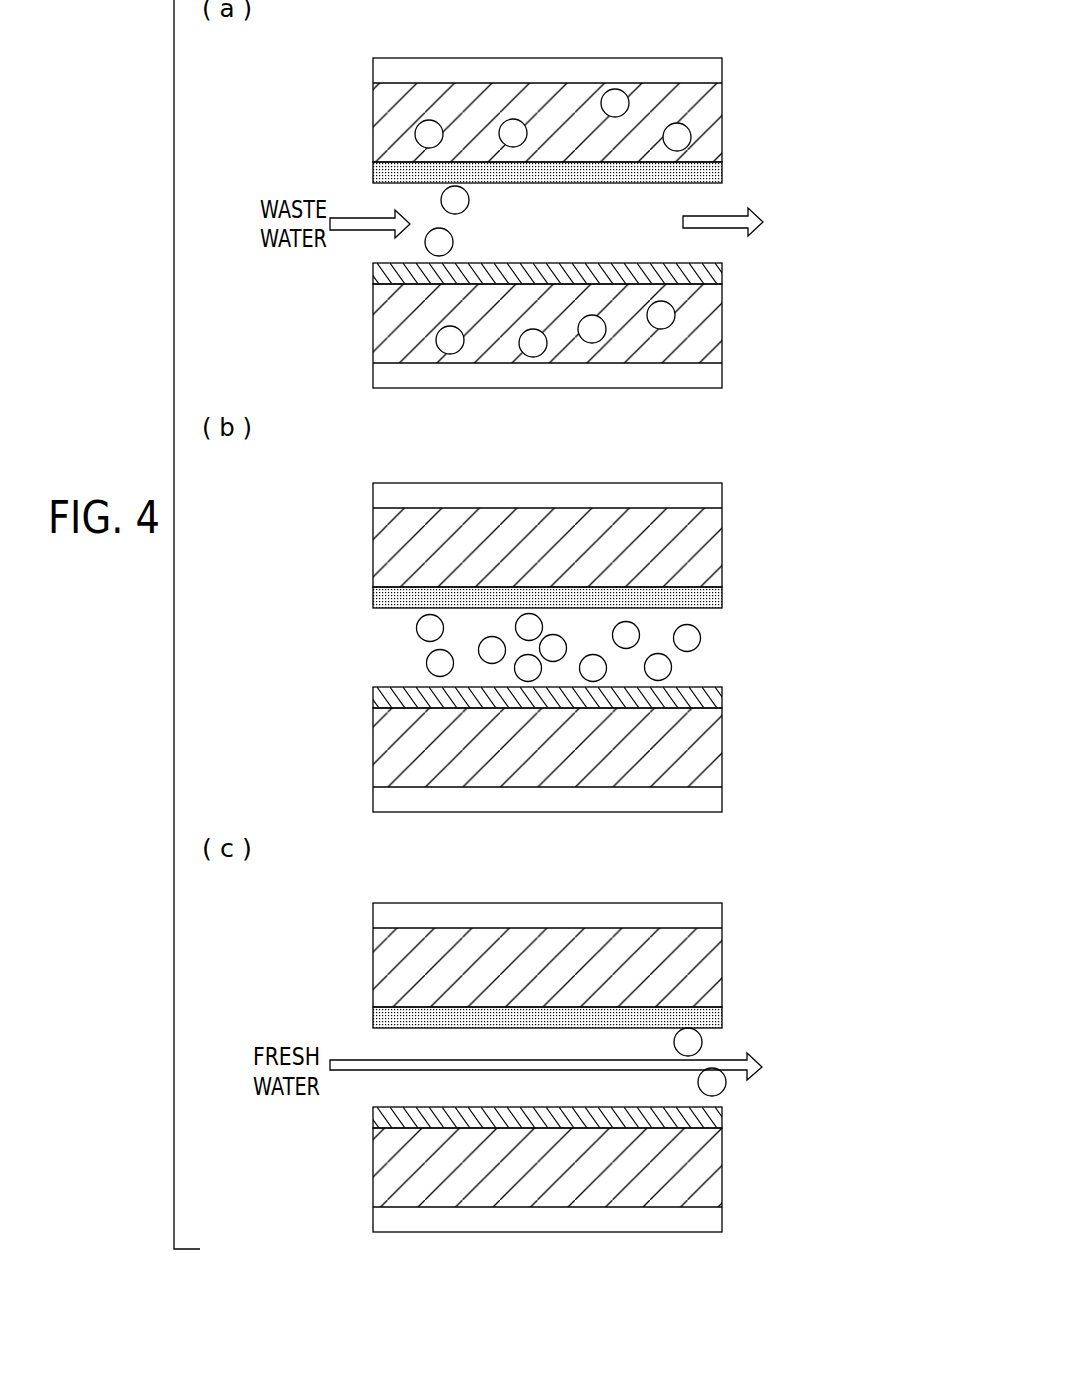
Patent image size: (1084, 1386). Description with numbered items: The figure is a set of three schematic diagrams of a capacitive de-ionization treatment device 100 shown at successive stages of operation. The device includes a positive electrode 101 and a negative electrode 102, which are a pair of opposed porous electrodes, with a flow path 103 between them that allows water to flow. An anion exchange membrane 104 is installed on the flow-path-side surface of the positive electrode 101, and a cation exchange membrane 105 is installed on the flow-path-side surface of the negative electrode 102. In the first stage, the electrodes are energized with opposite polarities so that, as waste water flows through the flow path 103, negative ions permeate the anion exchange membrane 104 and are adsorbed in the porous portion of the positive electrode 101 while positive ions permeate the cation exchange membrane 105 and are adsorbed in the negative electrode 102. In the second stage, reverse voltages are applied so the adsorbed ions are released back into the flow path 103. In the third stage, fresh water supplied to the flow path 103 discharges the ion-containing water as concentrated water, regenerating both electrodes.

The capacitive de-ionization treatment device 100 is at (340, 84).
The positive electrode 101 is at (731, 58).
The negative electrode 102 is at (729, 284).
The flow path 103 is at (668, 231).
The anion exchange membrane 104 is at (712, 174).
The cation exchange membrane 105 is at (722, 273).